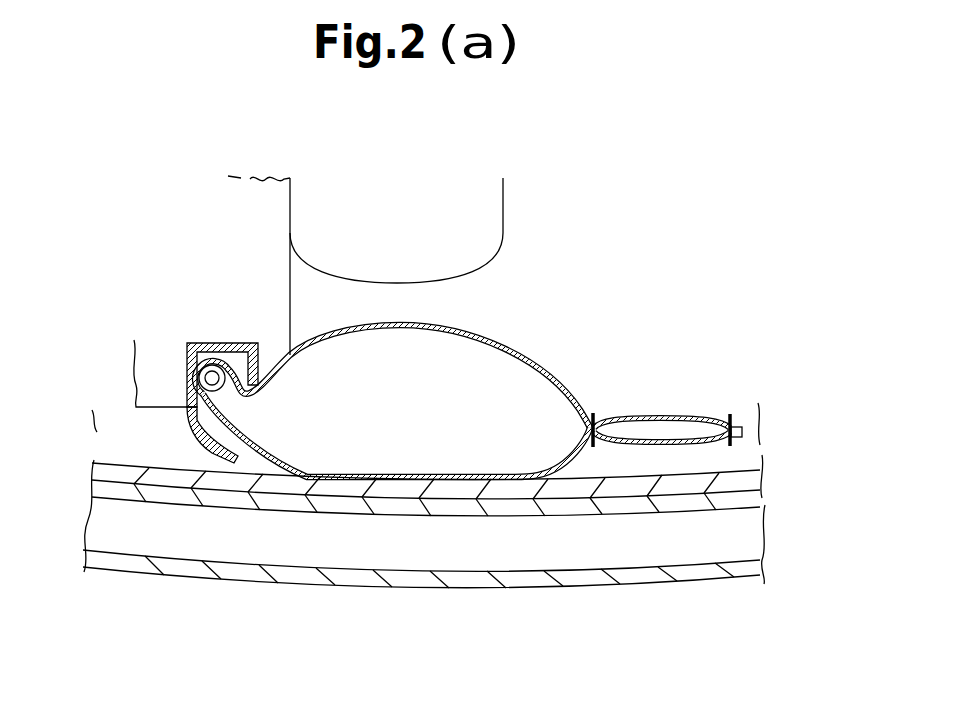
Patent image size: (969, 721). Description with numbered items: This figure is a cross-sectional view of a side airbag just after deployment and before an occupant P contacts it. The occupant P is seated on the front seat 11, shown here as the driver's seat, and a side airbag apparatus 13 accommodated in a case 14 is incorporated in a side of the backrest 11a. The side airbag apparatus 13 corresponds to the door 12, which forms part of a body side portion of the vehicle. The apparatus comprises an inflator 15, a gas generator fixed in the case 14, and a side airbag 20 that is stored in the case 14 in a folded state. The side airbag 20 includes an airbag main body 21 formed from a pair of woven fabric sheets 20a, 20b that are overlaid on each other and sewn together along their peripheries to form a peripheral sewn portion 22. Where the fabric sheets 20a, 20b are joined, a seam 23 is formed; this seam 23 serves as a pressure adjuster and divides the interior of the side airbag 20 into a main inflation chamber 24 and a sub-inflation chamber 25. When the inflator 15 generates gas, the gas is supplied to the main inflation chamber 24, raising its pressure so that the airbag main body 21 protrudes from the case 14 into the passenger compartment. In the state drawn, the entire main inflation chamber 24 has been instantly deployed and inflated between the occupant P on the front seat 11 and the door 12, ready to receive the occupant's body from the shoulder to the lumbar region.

The front seat 11 is at (318, 203).
The occupant P is at (503, 200).
The backrest 11a is at (282, 297).
The door 12 is at (475, 591).
The side airbag apparatus 13 is at (196, 369).
The case 14 is at (198, 342).
The inflator 15 is at (199, 380).
The side airbag 20 is at (427, 403).
The fabric sheet 20a is at (570, 462).
The fabric sheet 20b is at (397, 355).
The airbag main body 21 is at (473, 334).
The peripheral sewn portion 22 is at (730, 423).
The seam 23 is at (590, 418).
The main inflation chamber 24 is at (435, 438).
The sub-inflation chamber 25 is at (658, 430).